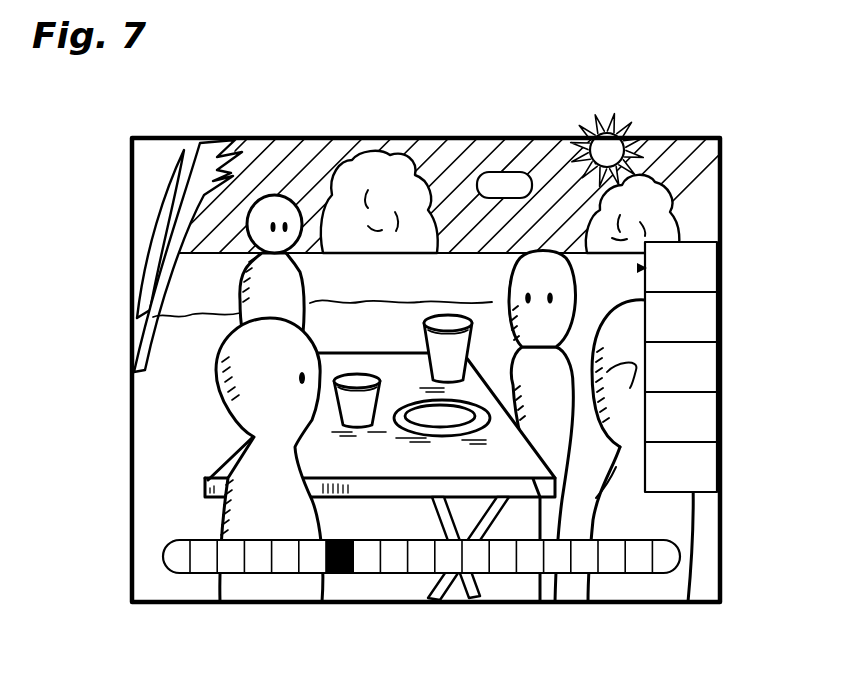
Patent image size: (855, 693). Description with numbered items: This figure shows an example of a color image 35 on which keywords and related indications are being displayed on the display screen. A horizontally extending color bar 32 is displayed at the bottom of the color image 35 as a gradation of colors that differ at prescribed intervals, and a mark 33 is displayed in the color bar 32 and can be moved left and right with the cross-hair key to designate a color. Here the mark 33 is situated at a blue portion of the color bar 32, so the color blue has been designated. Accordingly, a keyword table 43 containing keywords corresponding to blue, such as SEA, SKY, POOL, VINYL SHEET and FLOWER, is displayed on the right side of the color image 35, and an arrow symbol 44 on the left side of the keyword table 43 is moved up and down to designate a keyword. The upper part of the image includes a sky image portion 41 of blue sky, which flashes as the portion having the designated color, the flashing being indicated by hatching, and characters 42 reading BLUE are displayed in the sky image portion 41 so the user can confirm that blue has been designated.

The sky image portion 41 is at (340, 148).
The characters 42 is at (495, 172).
The keyword table 43 is at (697, 238).
The arrow symbol 44 is at (640, 268).
The color image 35 is at (707, 528).
The color bar 32 is at (668, 556).
The mark 33 is at (343, 576).